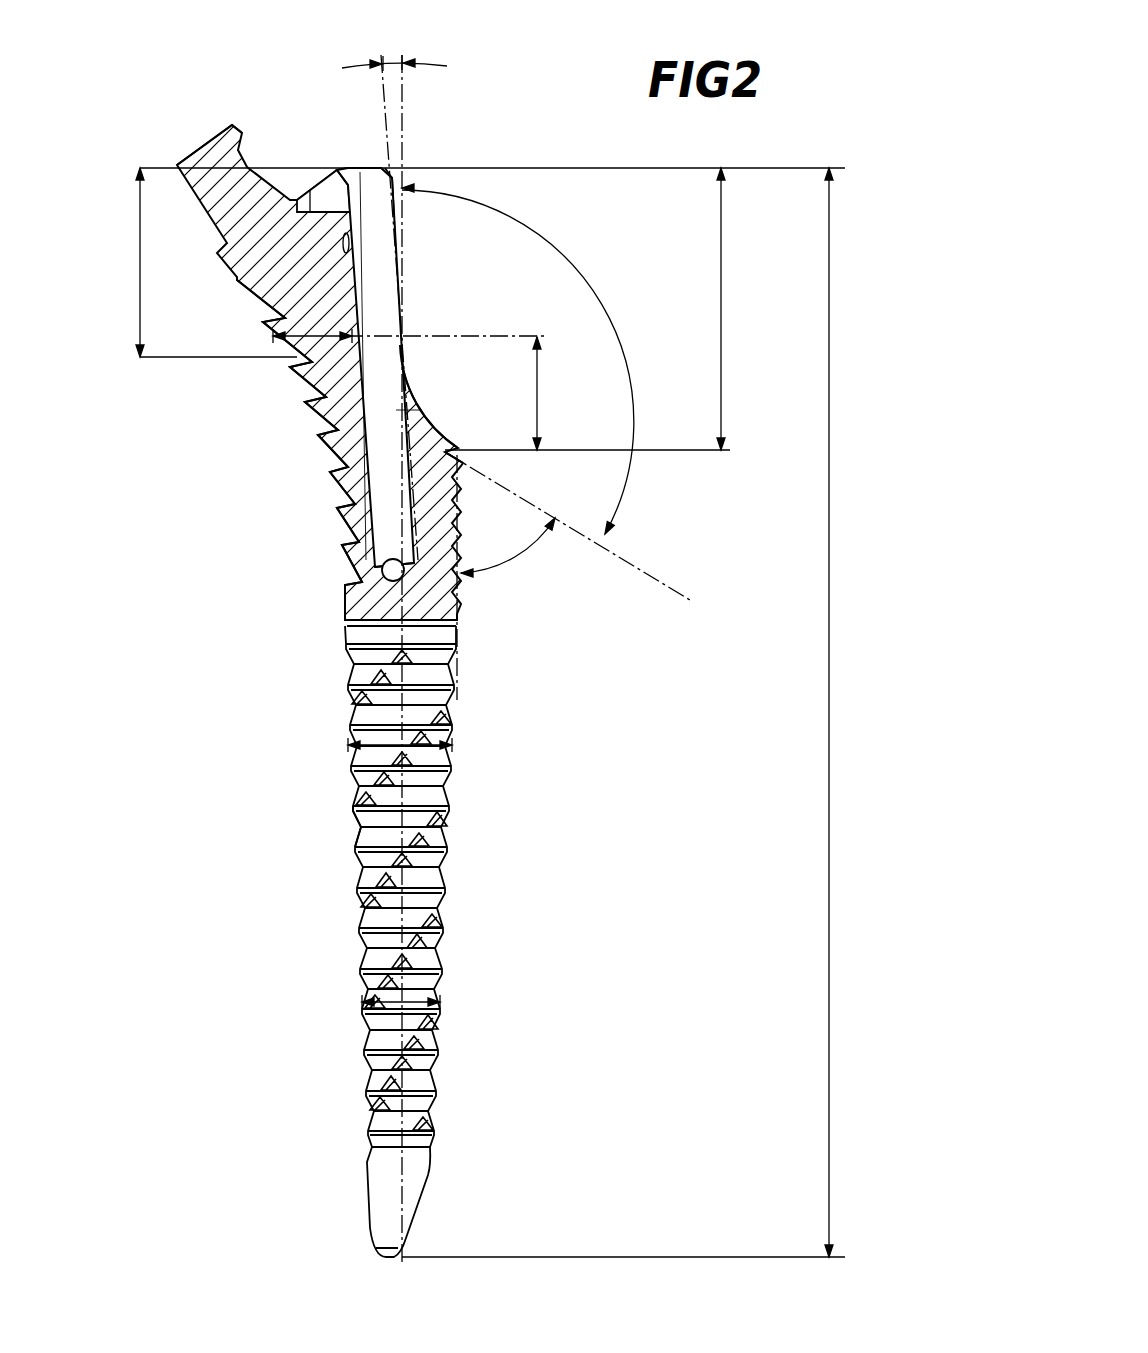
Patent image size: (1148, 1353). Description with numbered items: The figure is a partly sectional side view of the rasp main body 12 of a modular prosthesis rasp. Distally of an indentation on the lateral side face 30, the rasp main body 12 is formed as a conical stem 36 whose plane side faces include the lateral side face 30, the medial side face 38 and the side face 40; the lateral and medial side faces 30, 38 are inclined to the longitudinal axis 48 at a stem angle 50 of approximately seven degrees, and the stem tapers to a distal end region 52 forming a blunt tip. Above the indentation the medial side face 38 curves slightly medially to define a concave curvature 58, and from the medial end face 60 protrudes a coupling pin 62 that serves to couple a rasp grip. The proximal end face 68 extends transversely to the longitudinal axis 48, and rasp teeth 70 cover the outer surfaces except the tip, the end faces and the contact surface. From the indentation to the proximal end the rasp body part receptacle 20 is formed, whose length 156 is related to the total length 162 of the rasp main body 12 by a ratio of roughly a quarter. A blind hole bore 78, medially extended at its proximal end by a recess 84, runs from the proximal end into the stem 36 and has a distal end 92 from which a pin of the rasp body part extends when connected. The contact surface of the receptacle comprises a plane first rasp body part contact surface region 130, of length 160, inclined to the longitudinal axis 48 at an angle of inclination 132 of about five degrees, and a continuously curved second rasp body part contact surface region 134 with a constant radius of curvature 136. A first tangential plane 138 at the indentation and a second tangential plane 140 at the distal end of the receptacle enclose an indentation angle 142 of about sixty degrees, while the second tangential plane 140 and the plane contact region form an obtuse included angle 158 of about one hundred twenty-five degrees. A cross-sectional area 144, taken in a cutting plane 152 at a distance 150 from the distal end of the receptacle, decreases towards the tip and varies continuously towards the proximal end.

The rasp main body 12 is at (330, 623).
The rasp body part receptacle 20 is at (400, 214).
The lateral side face 30 is at (440, 803).
The stem 36 is at (372, 865).
The medial side face 38 is at (364, 803).
The side face 40 is at (370, 930).
The longitudinal axis 48 is at (403, 93).
The stem angle 50 is at (422, 1000).
The distal end region 52 is at (383, 1205).
The concave curvature 58 is at (318, 435).
The medial end face 60 is at (140, 268).
The coupling pin 62 is at (215, 153).
The proximal end face 68 is at (352, 167).
The rasp teeth 70 is at (445, 905).
The blind hole bore 78 is at (386, 548).
The recess 84 is at (317, 185).
The distal end 92 is at (384, 571).
The first rasp body part contact surface region 130 is at (398, 247).
The angle of inclination 132 is at (393, 62).
The second rasp body part contact surface region 134 is at (443, 421).
The radius of curvature 136 is at (477, 368).
The first tangential plane 138 is at (383, 88).
The second tangential plane 140 is at (690, 600).
The indentation angle 142 is at (522, 562).
The cross-sectional area 144 is at (318, 334).
The distance 150 is at (538, 382).
The cutting plane 152 is at (446, 334).
The length 156 is at (722, 299).
The included angle 158 is at (596, 290).
The length 160 is at (140, 268).
The total length 162 is at (830, 472).